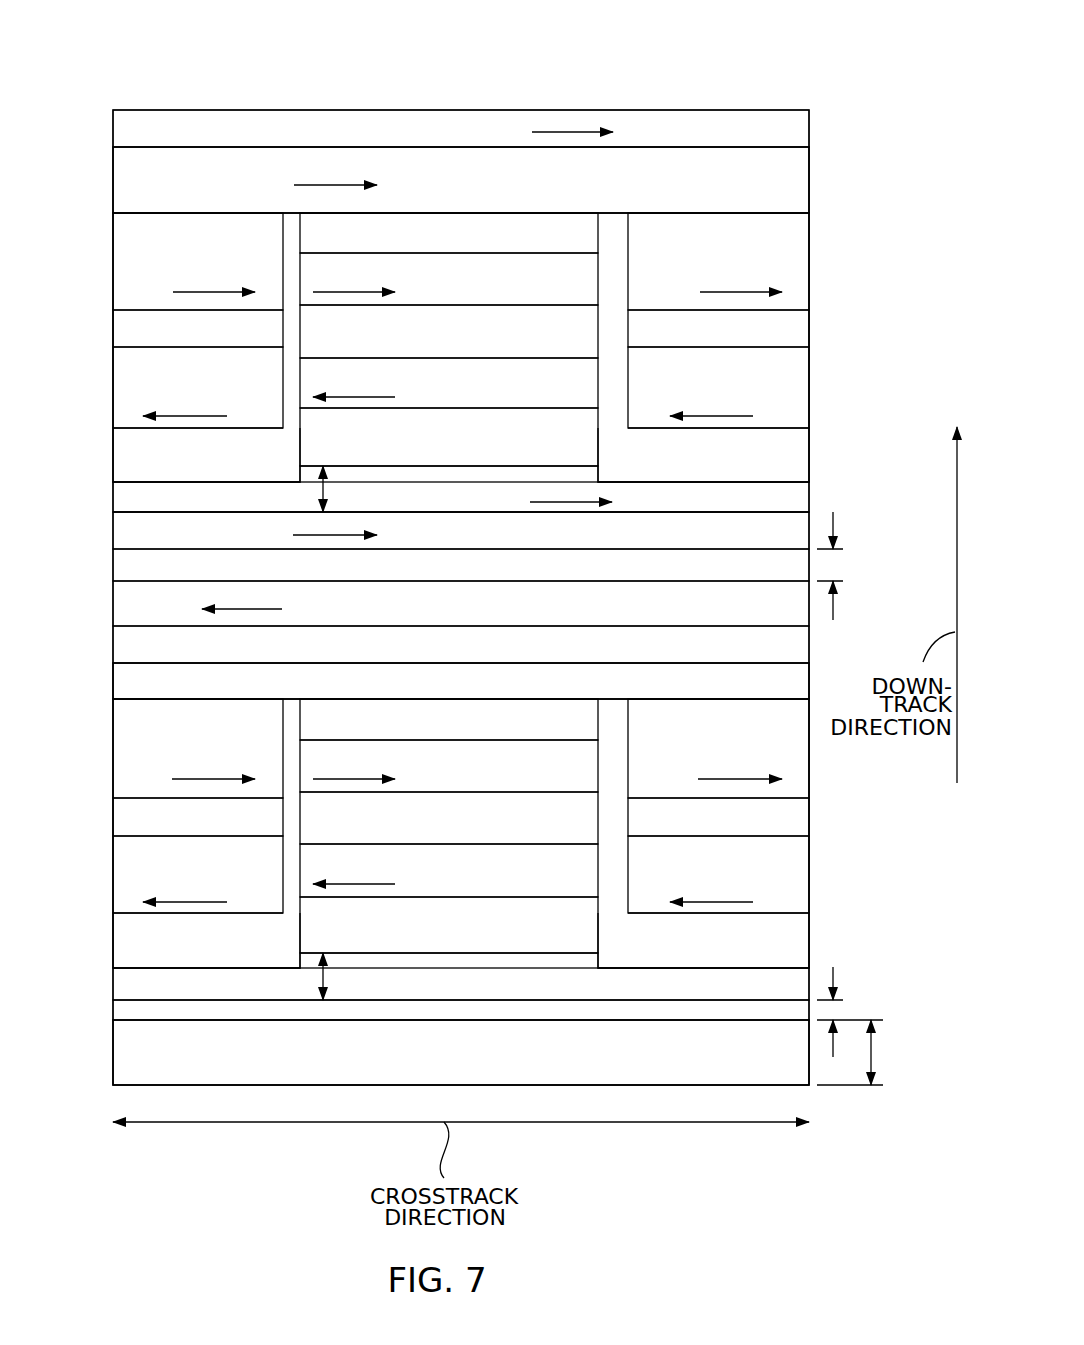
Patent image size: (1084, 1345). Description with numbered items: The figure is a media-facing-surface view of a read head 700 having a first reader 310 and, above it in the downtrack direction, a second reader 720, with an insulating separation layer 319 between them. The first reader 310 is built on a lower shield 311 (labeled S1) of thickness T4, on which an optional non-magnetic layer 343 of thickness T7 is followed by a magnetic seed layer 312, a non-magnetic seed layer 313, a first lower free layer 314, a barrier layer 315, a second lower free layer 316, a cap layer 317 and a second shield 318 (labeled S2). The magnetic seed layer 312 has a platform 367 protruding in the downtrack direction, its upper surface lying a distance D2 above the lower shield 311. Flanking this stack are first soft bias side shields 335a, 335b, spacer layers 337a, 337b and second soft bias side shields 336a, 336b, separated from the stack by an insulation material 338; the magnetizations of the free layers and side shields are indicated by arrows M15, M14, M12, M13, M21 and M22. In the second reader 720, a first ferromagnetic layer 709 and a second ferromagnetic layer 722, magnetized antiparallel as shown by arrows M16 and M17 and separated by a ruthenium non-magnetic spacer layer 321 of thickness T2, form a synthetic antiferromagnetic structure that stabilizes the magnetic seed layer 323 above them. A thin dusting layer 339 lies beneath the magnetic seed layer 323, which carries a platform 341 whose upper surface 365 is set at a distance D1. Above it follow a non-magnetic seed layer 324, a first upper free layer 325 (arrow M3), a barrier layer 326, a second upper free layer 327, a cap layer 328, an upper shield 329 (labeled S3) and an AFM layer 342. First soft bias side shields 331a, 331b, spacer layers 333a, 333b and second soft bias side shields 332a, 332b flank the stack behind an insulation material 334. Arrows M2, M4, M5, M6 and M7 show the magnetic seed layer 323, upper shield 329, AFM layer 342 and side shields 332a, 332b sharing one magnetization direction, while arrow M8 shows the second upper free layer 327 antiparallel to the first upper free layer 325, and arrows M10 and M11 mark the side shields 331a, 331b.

The read head 700 is at (162, 85).
The second reader 720 is at (95, 268).
The first reader 310 is at (93, 753).
The thin dusting layer 339 is at (120, 512).
The non-magnetic layer 343 is at (132, 1012).
The AFM layer 342 is at (461, 128).
The upper shield 329 is at (461, 180).
The third shield S3 is at (461, 180).
The cap layer 328 is at (449, 233).
The second upper free layer 327 is at (449, 279).
The barrier layer 326 is at (449, 331).
The first upper free layer 325 is at (449, 383).
The non-magnetic seed layer 324 is at (449, 437).
The magnetic seed layer 323 is at (461, 489).
The second FM layer 722 is at (461, 530).
The non-magnetic spacer layer 321 is at (461, 565).
The first FM layer 709 is at (461, 603).
The insulating separation layer 319 is at (461, 644).
The second shield 318 is at (461, 681).
The second shield S2 is at (461, 681).
The cap layer 317 is at (449, 719).
The second lower free layer 316 is at (449, 766).
The barrier layer 315 is at (449, 818).
The first lower free layer 314 is at (449, 870).
The non-magnetic seed layer 313 is at (449, 925).
The magnetic seed layer 312 is at (461, 976).
The lower shield 311 is at (461, 1052).
The first shield S1 is at (461, 1052).
The second soft bias side shield 332a is at (198, 261).
The second soft bias side shield 332b is at (718, 261).
The spacer layer 333a is at (198, 328).
The spacer layer 333b is at (718, 328).
The first soft bias side shield 331a is at (198, 387).
The first soft bias side shield 331b is at (718, 387).
The insulation material 334 is at (461, 455).
The second soft bias side shield 336a is at (198, 748).
The second soft bias side shield 336b is at (718, 748).
The spacer layer 337a is at (198, 817).
The spacer layer 337b is at (718, 817).
The first soft bias side shield 335a is at (198, 874).
The first soft bias side shield 335b is at (718, 874).
The insulation material 338 is at (461, 940).
The upper surface 365 is at (313, 466).
The platform 367 is at (313, 965).
The platform 341 is at (580, 482).
The magnetization arrow M2 is at (572, 502).
The magnetization of free layer 325 M3 is at (378, 397).
The magnetization arrow M4 is at (325, 185).
The magnetization arrow M5 is at (560, 132).
The magnetization arrow M6 is at (200, 292).
The magnetization arrow M7 is at (728, 292).
The magnetization arrow M8 is at (366, 292).
The magnetization arrow M10 is at (185, 416).
The magnetization arrow M11 is at (712, 416).
The magnetization arrow M12 is at (185, 902).
The magnetization arrow M13 is at (712, 902).
The magnetization arrow M14 is at (370, 779).
The magnetization arrow M15 is at (383, 884).
The magnetization arrow M16 is at (268, 609).
The magnetization arrow M17 is at (312, 535).
The magnetization of side shield 336a M21 is at (202, 779).
The magnetization of side shield 336b M22 is at (728, 779).
The distance D1 is at (327, 492).
The distance D2 is at (327, 980).
The thickness T2 is at (836, 566).
The thickness T7 is at (836, 1009).
The thickness T4 is at (876, 1053).